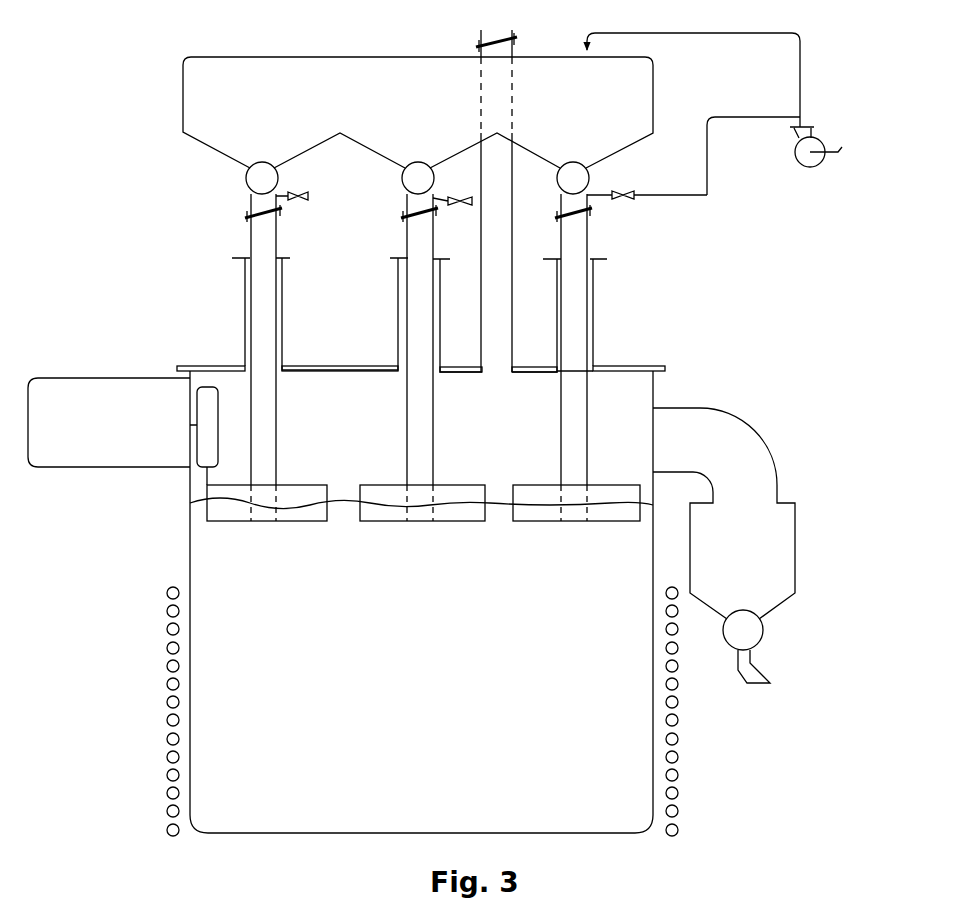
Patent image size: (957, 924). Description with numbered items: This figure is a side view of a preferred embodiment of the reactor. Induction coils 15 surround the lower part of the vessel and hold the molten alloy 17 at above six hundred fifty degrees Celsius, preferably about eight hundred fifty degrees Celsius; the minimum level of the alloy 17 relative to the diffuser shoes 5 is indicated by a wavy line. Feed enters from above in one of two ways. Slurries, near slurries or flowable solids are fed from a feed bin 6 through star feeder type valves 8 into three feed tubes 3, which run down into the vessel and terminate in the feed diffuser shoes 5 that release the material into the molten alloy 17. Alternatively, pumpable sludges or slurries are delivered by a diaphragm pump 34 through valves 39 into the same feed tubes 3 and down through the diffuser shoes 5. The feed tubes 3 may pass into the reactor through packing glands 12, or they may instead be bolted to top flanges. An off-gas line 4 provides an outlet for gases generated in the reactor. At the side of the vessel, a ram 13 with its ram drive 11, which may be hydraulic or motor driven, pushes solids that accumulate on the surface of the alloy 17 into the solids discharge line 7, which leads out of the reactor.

The feed tubes 3 is at (280, 232).
The off-gas line 4 is at (508, 266).
The feed diffuser shoes 5 is at (308, 524).
The feed bin 6 is at (180, 92).
The solids discharge line 7 is at (740, 434).
The star feeder type valves 8 is at (280, 175).
The ram drive 11 is at (86, 470).
The packing glands 12 is at (557, 312).
The ram 13 is at (203, 383).
The induction coils 15 is at (167, 648).
The molten alloy 17 is at (250, 583).
The diaphragm pump 34 is at (818, 168).
The valves 39 is at (312, 196).